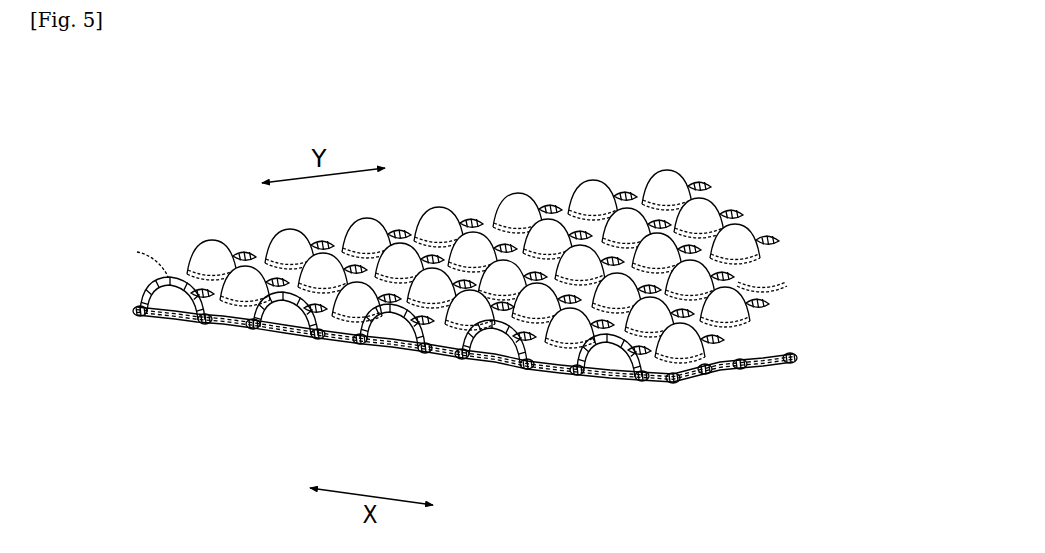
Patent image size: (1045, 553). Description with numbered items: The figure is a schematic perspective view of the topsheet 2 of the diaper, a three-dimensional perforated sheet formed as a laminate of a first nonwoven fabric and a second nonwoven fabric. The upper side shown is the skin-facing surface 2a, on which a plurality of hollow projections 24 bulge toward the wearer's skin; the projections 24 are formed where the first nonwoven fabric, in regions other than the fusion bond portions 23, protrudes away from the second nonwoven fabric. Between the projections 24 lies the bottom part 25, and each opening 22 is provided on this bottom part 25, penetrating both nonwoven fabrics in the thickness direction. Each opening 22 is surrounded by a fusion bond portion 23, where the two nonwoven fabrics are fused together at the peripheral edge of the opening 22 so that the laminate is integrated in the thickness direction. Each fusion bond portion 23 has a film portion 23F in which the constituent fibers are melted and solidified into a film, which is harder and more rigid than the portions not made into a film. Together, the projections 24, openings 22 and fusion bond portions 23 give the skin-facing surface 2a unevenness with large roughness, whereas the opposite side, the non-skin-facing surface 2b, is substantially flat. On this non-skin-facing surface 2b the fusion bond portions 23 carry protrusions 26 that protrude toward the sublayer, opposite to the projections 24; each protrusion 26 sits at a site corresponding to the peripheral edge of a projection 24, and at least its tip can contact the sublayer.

The topsheet 2 is at (457, 276).
The skin-facing surface 2a is at (204, 231).
The non-skin-facing surface 2b is at (166, 326).
The opening 22 is at (462, 272).
The fusion bond portion 23 is at (457, 293).
The film portion 23F is at (391, 375).
The projection 24 is at (440, 207).
The bottom part 25 is at (486, 204).
The protrusion 26 is at (391, 375).